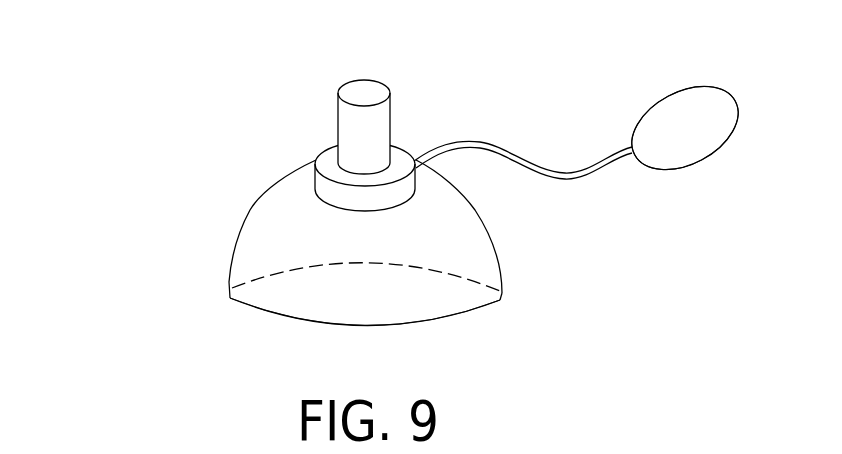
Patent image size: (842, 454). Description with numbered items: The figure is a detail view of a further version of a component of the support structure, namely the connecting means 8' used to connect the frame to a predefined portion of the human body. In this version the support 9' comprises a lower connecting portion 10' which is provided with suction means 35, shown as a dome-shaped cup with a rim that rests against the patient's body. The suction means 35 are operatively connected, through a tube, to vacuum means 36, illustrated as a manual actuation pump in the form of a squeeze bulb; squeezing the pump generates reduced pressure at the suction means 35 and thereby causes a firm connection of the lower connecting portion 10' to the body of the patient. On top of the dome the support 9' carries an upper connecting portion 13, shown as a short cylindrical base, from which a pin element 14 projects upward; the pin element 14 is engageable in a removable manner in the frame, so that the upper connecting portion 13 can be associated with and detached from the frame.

The connecting means 8' is at (117, 171).
The support 9' is at (583, 127).
The lower connecting portion 10' is at (430, 243).
The upper connecting portion 13 is at (270, 123).
The pin element 14 is at (366, 82).
The suction means 35 is at (228, 282).
The vacuum means 36 is at (710, 88).